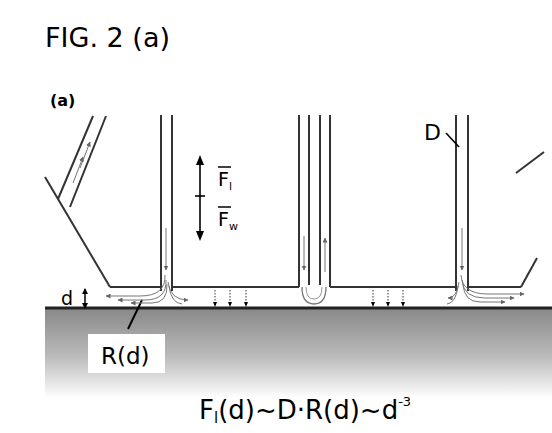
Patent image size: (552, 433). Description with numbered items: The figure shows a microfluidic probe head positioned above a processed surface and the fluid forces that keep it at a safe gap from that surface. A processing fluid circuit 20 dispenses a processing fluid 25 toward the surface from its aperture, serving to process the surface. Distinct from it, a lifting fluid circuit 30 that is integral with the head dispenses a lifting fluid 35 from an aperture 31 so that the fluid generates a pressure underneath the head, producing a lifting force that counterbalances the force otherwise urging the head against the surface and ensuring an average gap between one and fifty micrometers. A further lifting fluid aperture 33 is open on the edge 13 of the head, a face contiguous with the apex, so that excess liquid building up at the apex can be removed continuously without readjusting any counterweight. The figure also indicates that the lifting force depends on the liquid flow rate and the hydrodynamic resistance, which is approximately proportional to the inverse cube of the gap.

The edge of the probe head 13 is at (86, 255).
The processing fluid circuit 20 is at (309, 128).
The processing fluid 25 is at (319, 298).
The lifting fluid circuit 30 is at (167, 160).
The lifting fluid aperture 31 is at (175, 308).
The additional lifting fluid aperture 33 is at (61, 206).
The lifting fluid 35 is at (485, 292).